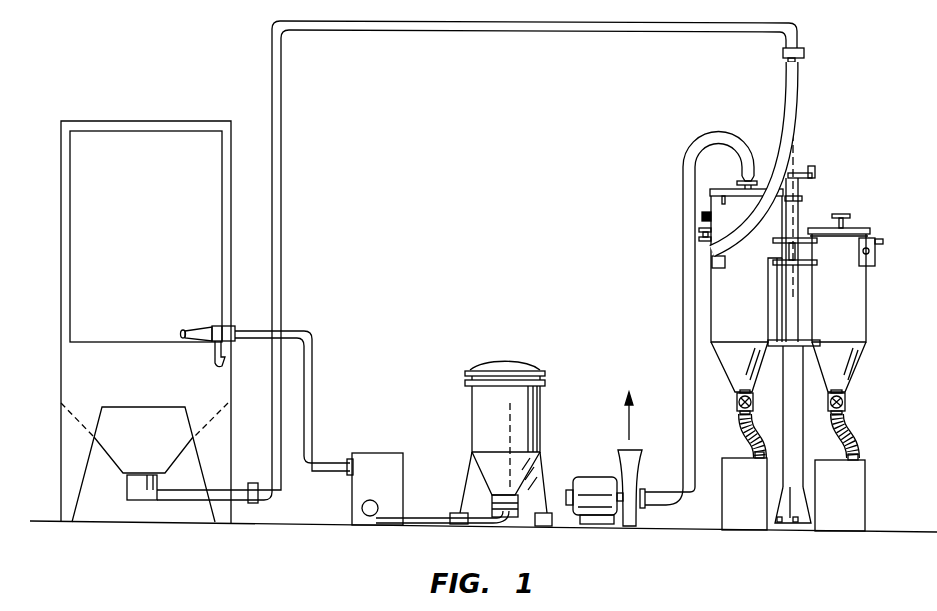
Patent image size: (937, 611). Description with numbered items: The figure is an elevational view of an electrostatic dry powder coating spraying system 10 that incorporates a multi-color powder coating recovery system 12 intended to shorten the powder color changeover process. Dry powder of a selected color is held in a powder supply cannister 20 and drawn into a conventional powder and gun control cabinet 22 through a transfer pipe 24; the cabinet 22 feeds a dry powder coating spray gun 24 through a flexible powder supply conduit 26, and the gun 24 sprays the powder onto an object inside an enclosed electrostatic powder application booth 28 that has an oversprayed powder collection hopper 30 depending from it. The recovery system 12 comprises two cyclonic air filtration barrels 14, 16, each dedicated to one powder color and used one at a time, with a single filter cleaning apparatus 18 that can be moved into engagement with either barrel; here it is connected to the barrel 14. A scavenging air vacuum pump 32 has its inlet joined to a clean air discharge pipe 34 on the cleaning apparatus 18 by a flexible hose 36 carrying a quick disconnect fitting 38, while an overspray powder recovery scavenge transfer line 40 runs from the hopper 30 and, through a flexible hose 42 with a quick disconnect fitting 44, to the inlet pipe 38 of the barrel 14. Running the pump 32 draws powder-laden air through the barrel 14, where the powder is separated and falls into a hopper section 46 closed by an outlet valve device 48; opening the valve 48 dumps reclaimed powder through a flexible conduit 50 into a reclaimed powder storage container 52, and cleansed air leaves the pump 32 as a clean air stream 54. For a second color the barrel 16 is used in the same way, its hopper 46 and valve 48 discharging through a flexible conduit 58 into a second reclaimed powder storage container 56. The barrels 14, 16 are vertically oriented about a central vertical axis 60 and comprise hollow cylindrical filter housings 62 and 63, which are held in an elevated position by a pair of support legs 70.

The electrostatic dry powder coating spraying system 10 is at (212, 68).
The multi-color powder coating recovery system 12 is at (627, 175).
The cyclonic air filtration barrel 14 is at (700, 292).
The cyclonic air filtration barrel 16 is at (872, 292).
The filter cleaning apparatus 18 is at (702, 216).
The powder supply cannister 20 is at (519, 354).
The powder and gun control cabinet 22 is at (386, 453).
The dry powder coating spray gun 24 is at (200, 327).
The flexible powder supply conduit 26 is at (313, 398).
The electrostatic powder application booth 28 is at (60, 219).
The oversprayed powder collection hopper 30 is at (108, 462).
The scavenging air vacuum pump 32 is at (591, 477).
The clean air discharge pipe 34 is at (737, 183).
The flexible hose 36 is at (683, 323).
The inlet pipe 38 is at (742, 165).
The overspray powder recovery scavenge transfer line 40 is at (566, 47).
The flexible hose 42 is at (778, 110).
The quick disconnect fitting 44 is at (710, 250).
The hopper section 46 is at (718, 359).
The outlet valve device 48 is at (737, 402).
The flexible conduit 50 is at (743, 438).
The reclaimed powder storage container 52 is at (722, 508).
The clean air stream 54 is at (628, 420).
The second reclaimed powder storage container 56 is at (866, 500).
The flexible conduit 58 is at (855, 438).
The central vertical axis 60 is at (799, 147).
The hollow cylindrical filter housing 62 is at (724, 319).
The hollow cylindrical filter housing 63 is at (816, 319).
The support legs 70 is at (790, 412).